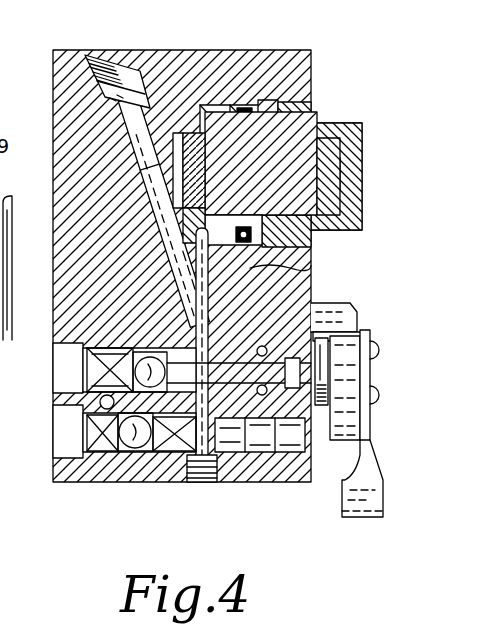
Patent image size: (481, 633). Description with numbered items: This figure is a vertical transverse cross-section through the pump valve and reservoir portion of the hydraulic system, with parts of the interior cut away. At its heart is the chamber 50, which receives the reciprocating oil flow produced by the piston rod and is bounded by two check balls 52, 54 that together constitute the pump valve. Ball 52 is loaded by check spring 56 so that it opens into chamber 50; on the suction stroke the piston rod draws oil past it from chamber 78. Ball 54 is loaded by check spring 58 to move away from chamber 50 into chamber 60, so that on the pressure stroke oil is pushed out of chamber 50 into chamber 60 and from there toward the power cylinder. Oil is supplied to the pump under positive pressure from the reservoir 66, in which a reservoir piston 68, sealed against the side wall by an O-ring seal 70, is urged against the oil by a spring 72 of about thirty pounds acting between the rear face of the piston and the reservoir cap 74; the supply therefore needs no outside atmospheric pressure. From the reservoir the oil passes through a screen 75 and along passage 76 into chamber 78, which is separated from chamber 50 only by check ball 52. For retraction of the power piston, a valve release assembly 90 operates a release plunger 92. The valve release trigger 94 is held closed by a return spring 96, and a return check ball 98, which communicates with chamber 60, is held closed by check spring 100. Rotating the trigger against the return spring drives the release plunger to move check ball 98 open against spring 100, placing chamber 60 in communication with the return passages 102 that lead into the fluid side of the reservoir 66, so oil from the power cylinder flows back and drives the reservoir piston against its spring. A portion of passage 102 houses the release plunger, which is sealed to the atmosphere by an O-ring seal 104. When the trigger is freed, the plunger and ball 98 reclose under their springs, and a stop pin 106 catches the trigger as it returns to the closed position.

The chamber 50 is at (165, 442).
The check ball 52 is at (225, 480).
The check ball 54 is at (115, 455).
The check spring 56 is at (166, 452).
The check spring 58 is at (95, 455).
The chamber 60 is at (85, 348).
The reservoir 66 is at (222, 112).
The reservoir piston 68 is at (310, 132).
The "O" ring seal 70 is at (252, 122).
The spring 72 is at (345, 173).
The reservoir cap 74 is at (355, 200).
The screen 75 is at (182, 150).
The passage 76 is at (152, 188).
The chamber 78 is at (236, 442).
The valve release assembly 90 is at (375, 370).
The release plunger 92 is at (248, 356).
The valve release trigger 94 is at (372, 492).
The return spring 96 is at (318, 368).
The return check ball 98 is at (158, 355).
The check spring 100 is at (107, 356).
The passages 102 is at (190, 268).
The "O" ring seal 104 is at (318, 318).
The stop pin 106 is at (345, 315).